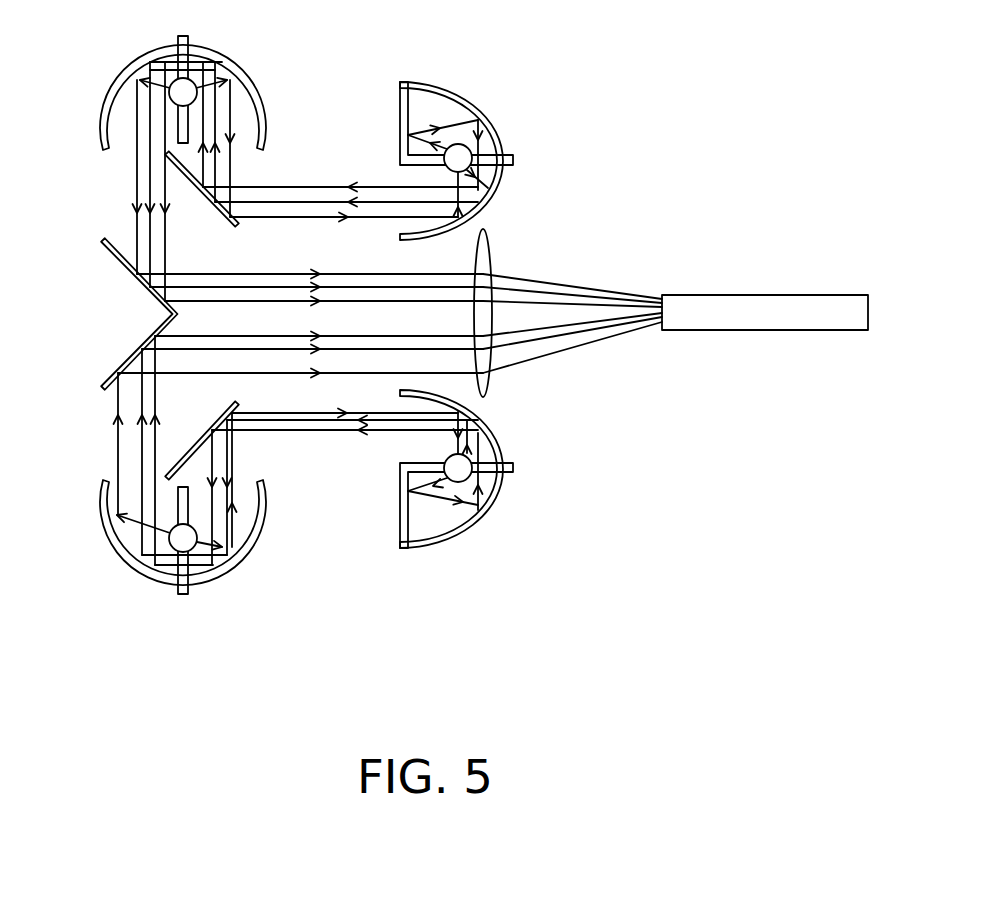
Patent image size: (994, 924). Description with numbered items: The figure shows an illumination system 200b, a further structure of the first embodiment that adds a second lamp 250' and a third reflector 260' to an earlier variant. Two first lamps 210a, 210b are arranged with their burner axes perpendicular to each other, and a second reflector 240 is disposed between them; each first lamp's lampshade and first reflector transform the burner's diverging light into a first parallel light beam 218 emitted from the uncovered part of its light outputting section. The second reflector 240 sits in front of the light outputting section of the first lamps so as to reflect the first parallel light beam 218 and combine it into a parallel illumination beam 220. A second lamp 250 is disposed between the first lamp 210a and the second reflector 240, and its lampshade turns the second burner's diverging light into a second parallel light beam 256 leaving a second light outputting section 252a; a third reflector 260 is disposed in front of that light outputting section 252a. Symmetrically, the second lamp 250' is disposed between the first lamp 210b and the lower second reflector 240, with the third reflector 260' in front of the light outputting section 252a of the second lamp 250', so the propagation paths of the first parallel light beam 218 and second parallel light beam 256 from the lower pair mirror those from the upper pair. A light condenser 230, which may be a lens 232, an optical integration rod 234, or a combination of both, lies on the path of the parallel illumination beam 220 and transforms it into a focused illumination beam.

The illumination system 200b is at (468, 688).
The first lamp 210a is at (467, 87).
The first lamp 210b is at (463, 543).
The first parallel light beam 218 is at (367, 184).
The parallel illumination beam 220 is at (459, 257).
The light condenser 230 is at (675, 379).
The lens 232 is at (483, 368).
The optical integration rod 234 is at (690, 320).
The second reflector 240 is at (117, 241).
The second lamp 250 is at (232, 93).
The second lamp 250' is at (200, 531).
The second light outputting section 252a is at (128, 477).
The second parallel light beam 256 is at (136, 176).
The third reflector 260 is at (258, 207).
The third reflector 260' is at (250, 451).